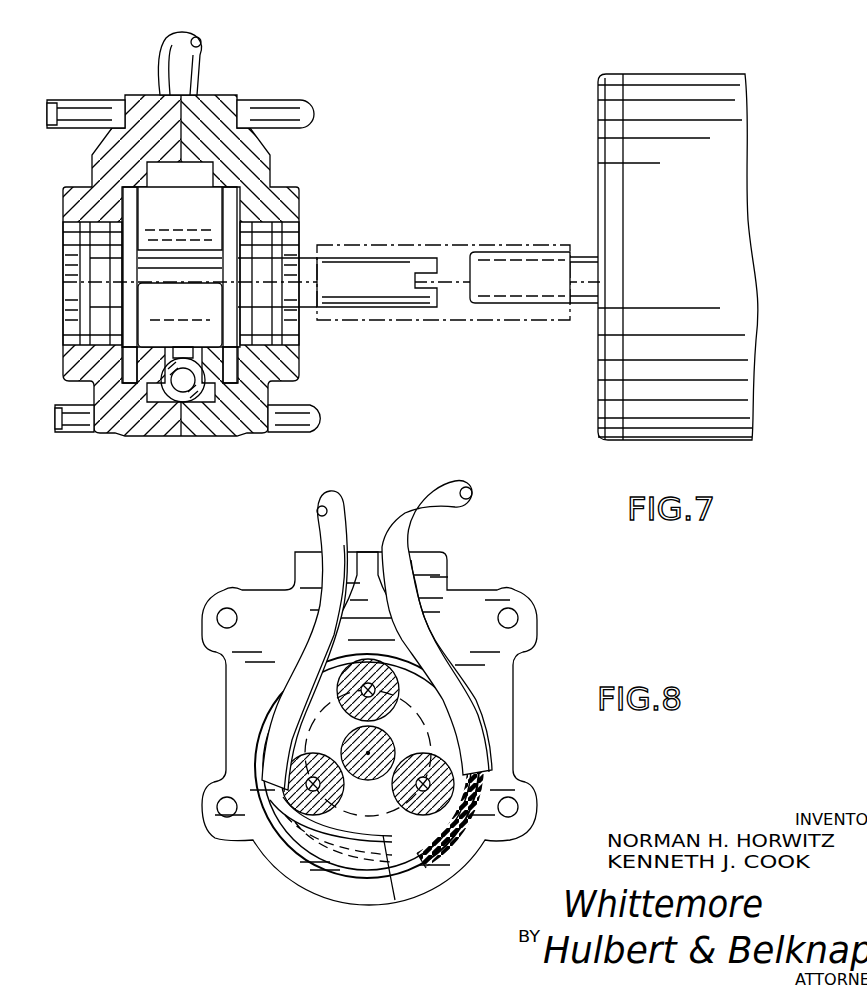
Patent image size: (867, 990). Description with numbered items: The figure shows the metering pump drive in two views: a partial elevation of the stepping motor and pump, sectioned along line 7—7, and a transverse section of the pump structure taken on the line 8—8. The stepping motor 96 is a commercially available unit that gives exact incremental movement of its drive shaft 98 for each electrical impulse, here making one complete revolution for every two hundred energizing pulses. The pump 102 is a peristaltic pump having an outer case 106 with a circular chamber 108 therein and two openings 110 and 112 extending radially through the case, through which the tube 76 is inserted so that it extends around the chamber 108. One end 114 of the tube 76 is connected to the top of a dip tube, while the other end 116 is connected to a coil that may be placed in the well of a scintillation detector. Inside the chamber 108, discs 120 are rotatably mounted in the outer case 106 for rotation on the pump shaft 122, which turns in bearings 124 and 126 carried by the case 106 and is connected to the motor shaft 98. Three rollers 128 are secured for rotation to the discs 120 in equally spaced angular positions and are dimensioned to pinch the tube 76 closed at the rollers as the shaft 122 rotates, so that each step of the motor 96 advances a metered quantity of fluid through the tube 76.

In FIG. 8, the section line 7— 7 is at (368, 453).
In FIG. 7, the section line 8— 8 is at (178, 3).
In FIG. 8, the tube 76 is at (455, 510).
In FIG. 7, the stepping motor 96 is at (657, 73).
In FIG. 7, the drive shaft 98 is at (592, 305).
In FIG. 7, the pump 102 is at (300, 197).
In FIG. 7, the outer case 106 is at (138, 437).
In FIG. 8, the circular chamber 108 is at (292, 832).
In FIG. 8, the opening 110 is at (413, 577).
In FIG. 8, the opening 112 is at (330, 568).
In FIG. 8, the end of tube 114 is at (318, 510).
In FIG. 8, the end of tube 116 is at (468, 482).
In FIG. 8, the discs 120 is at (398, 896).
In FIG. 7, the pump shaft 122 is at (360, 308).
In FIG. 8, the pump shaft 122 is at (340, 733).
In FIG. 7, the bearing 124 is at (66, 243).
In FIG. 7, the bearing 126 is at (296, 242).
In FIG. 8, the rollers 128 is at (458, 825).